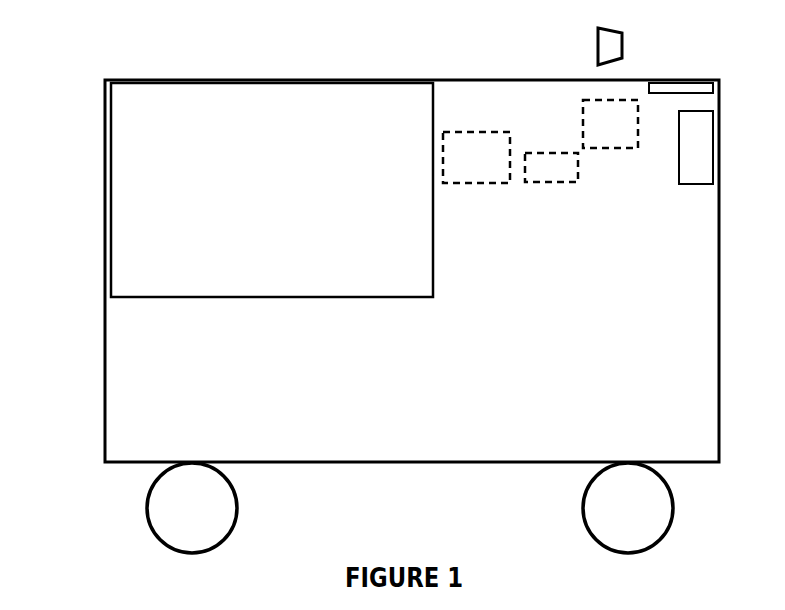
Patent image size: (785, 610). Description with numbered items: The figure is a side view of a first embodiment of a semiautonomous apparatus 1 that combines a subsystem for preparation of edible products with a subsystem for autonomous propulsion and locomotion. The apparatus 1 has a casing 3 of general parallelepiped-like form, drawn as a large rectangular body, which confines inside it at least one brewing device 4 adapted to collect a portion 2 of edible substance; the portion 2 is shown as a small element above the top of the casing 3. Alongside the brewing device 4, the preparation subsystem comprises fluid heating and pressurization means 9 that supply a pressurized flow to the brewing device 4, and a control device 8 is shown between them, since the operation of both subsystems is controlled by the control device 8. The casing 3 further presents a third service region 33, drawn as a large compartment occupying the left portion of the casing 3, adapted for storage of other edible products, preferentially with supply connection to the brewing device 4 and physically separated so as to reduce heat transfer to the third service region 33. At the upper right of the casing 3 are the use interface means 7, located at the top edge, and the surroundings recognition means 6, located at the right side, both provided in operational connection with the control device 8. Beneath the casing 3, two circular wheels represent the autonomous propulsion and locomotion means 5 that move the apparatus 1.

The semiautonomous apparatus 1 is at (390, 276).
The portion of edible substance 2 is at (615, 32).
The casing 3 is at (412, 255).
The brewing device 4 is at (610, 124).
The autonomous propulsion and locomotion means 5 is at (410, 508).
The surroundings recognition means 6 is at (717, 147).
The use interface means 7 is at (681, 68).
The control device 8 is at (551, 150).
The fluid heating and pressurization means 9 is at (476, 143).
The third service region 33 is at (272, 190).